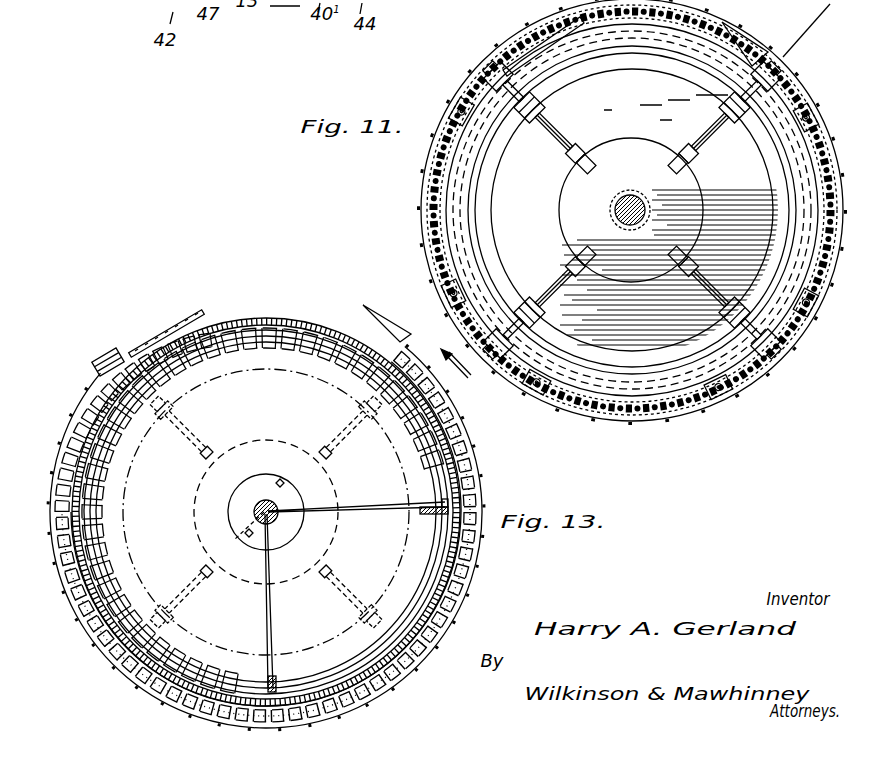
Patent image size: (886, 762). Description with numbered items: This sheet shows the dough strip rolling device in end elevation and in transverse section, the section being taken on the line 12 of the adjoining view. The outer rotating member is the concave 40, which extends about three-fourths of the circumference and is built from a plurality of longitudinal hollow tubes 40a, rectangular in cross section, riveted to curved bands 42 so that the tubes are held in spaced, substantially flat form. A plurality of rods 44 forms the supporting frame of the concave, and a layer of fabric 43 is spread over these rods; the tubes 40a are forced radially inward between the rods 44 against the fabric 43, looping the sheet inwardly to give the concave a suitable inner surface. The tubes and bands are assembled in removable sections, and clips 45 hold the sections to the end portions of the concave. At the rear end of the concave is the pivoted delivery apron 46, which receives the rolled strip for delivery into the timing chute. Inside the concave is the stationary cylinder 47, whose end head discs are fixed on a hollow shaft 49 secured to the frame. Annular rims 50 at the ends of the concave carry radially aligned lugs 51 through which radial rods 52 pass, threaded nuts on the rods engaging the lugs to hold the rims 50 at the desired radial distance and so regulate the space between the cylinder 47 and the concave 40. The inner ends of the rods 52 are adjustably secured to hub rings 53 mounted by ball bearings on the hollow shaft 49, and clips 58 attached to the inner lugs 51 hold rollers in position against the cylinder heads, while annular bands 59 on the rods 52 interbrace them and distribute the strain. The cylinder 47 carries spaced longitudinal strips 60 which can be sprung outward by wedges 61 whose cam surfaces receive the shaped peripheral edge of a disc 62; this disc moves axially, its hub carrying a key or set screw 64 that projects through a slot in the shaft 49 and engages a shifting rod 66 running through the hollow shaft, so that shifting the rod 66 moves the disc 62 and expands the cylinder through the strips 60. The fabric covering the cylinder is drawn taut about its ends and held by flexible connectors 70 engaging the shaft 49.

In FIG. 13, the section line 12 is at (450, 351).
In FIG. 11, the concave 40 is at (805, 97).
In FIG. 13, the concave 40 is at (476, 440).
In FIG. 11, the hollow tubes 40a is at (678, 422).
In FIG. 13, the hollow tubes 40a is at (135, 667).
In FIG. 11, the curved bands 42 is at (440, 195).
In FIG. 13, the layer of fabric 43 is at (448, 567).
In FIG. 11, the rods 44 is at (798, 322).
In FIG. 13, the rods 44 is at (108, 652).
In FIG. 11, the clips 45 is at (736, 396).
In FIG. 11, the pivoted delivery apron 46 is at (578, 20).
In FIG. 13, the pivoted delivery apron 46 is at (200, 308).
In FIG. 11, the stationary cylinder 47 is at (668, 32).
In FIG. 13, the stationary cylinder 47 is at (425, 580).
In FIG. 11, the hollow shaft 49 is at (611, 207).
In FIG. 13, the hollow shaft 49 is at (263, 498).
In FIG. 11, the annular rims 50 is at (455, 163).
In FIG. 13, the annular rims 50 is at (439, 553).
In FIG. 11, the lugs 51 is at (498, 362).
In FIG. 11, the radial rods 52 is at (710, 282).
In FIG. 13, the radial rods 52 is at (266, 512).
In FIG. 11, the hub rings 53 is at (556, 232).
In FIG. 13, the hub rings 53 is at (195, 520).
In FIG. 11, the clips 58 is at (736, 125).
In FIG. 11, the annular bands 59 is at (695, 58).
In FIG. 11, the longitudinal strips 60 is at (610, 50).
In FIG. 13, the longitudinal strips 60 is at (253, 336).
In FIG. 13, the wedges 61 is at (190, 662).
In FIG. 13, the disc 62 is at (304, 318).
In FIG. 13, the key or set screw 64 is at (244, 540).
In FIG. 11, the shifting rod 66 is at (630, 190).
In FIG. 13, the shifting rod 66 is at (251, 507).
In FIG. 13, the flexible connectors 70 is at (272, 618).